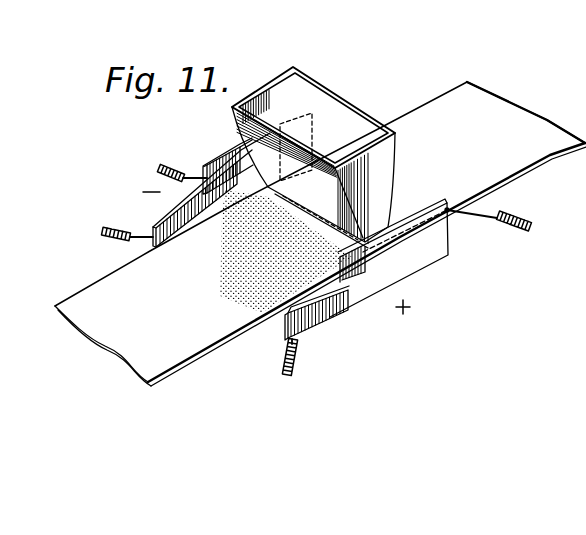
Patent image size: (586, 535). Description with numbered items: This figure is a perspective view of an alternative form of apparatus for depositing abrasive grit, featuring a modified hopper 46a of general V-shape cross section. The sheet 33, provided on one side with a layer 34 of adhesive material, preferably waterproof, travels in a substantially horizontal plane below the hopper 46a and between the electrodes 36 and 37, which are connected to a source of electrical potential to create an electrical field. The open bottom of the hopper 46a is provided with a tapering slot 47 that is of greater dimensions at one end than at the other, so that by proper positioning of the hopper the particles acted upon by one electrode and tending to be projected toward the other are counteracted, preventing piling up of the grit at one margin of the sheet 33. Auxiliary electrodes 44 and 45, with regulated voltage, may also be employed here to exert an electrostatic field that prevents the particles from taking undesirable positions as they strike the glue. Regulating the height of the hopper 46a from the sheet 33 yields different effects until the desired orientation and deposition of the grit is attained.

The sheet 33 is at (320, 234).
The layer of adhesive material 34 is at (552, 159).
The electrode 36 is at (222, 160).
The electrode 37 is at (412, 230).
The auxiliary electrode 44 is at (150, 242).
The auxiliary electrode 45 is at (346, 302).
The hopper 46a is at (397, 164).
The tapering slot 47 is at (363, 242).